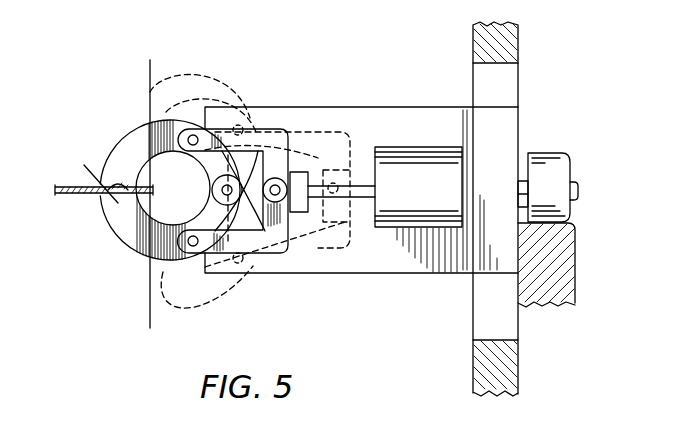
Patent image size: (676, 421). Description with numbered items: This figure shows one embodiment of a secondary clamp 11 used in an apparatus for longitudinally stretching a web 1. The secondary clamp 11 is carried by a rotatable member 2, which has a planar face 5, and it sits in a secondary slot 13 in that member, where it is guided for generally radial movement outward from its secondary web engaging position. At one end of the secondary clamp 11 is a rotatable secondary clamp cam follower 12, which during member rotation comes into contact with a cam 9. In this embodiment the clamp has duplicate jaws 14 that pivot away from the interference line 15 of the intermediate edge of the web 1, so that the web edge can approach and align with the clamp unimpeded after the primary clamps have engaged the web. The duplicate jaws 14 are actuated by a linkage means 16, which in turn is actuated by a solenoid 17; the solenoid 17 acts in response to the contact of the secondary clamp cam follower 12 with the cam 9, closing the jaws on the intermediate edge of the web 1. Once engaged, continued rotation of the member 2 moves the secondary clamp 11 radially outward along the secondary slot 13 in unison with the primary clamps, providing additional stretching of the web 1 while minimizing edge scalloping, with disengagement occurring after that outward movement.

The web 1 is at (72, 194).
The rotatable member 2 is at (526, 48).
The face 5 is at (472, 357).
The cam 9 is at (567, 253).
The secondary clamp 11 is at (383, 102).
The secondary clamp cam follower 12 is at (548, 154).
The secondary slot 13 is at (483, 305).
The duplicate jaws 14 is at (121, 172).
The interference line 15 is at (148, 305).
The linkage means 16 is at (268, 138).
The solenoid 17 is at (426, 199).